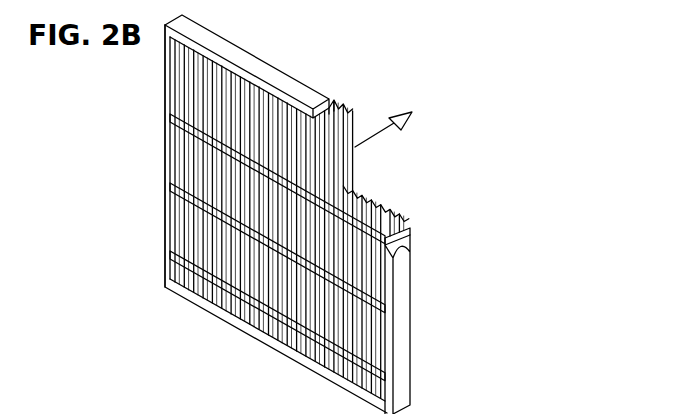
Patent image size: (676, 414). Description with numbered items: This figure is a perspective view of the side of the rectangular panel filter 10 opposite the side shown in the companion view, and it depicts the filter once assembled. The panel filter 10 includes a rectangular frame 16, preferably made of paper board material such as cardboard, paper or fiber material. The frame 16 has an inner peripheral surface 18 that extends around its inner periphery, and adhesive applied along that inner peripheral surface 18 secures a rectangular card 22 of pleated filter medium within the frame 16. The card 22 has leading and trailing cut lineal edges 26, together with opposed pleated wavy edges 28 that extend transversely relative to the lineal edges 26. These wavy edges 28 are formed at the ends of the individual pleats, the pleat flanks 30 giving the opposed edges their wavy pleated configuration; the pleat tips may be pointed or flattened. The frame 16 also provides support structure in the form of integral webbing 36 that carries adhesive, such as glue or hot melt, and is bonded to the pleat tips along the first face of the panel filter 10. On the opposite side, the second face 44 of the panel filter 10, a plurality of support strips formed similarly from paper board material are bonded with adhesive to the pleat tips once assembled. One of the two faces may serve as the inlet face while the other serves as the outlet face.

The panel filter 10 is at (488, 165).
The rectangular frame 16 is at (240, 62).
The inner peripheral surface 18 is at (410, 244).
The rectangular card 22 is at (388, 174).
The cut lineal edges 26 is at (405, 232).
The pleated wavy edges 28 is at (347, 128).
The pleat flanks 30 is at (350, 142).
The integral webbing 36 is at (205, 205).
The second face 44 is at (175, 165).